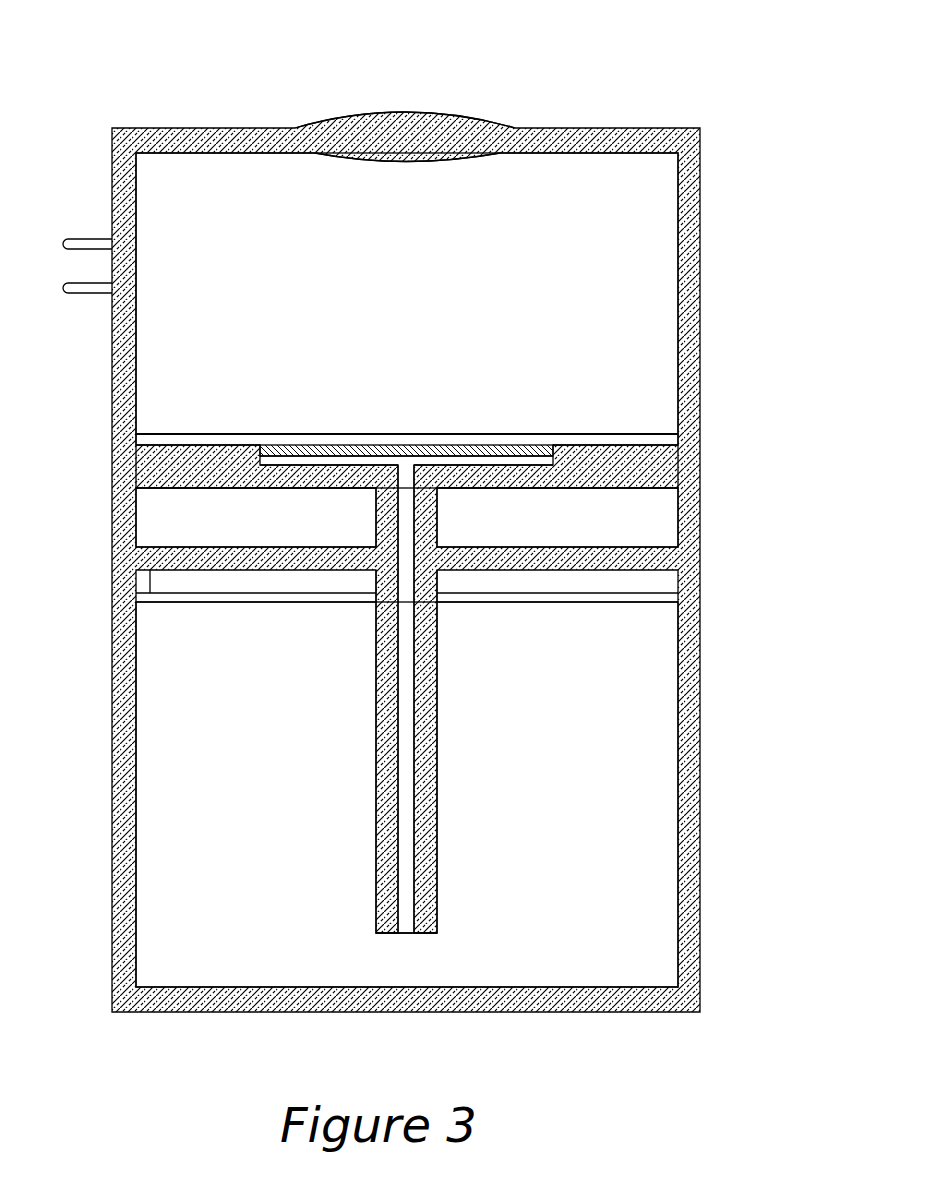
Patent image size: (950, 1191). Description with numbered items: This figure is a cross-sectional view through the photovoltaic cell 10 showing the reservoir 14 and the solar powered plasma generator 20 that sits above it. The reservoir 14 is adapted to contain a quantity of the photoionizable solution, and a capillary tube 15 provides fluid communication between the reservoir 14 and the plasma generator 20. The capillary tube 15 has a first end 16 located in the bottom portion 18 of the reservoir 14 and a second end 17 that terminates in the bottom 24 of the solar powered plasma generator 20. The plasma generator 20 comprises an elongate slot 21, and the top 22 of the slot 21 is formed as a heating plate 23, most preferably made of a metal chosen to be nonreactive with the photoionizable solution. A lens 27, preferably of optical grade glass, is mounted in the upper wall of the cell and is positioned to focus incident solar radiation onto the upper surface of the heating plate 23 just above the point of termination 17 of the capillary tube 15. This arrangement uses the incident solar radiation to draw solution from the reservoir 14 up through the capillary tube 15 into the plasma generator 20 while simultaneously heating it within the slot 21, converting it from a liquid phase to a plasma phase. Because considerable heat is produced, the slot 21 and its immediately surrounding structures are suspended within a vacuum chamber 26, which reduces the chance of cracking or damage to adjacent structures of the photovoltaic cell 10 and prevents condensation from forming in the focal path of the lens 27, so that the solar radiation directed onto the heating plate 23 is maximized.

The photovoltaic cell 10 is at (374, 519).
The reservoir 14 is at (182, 761).
The capillary tube 15 is at (428, 748).
The first end 16 is at (408, 937).
The second end 17 is at (410, 462).
The bottom portion 18 is at (248, 919).
The solar powered plasma generator 20 is at (545, 416).
The elongate slot 21 is at (298, 447).
The top 22 is at (255, 455).
The heating plate 23 is at (368, 450).
The bottom 24 is at (345, 483).
The vacuum chamber 26 is at (588, 231).
The lens 27 is at (405, 122).